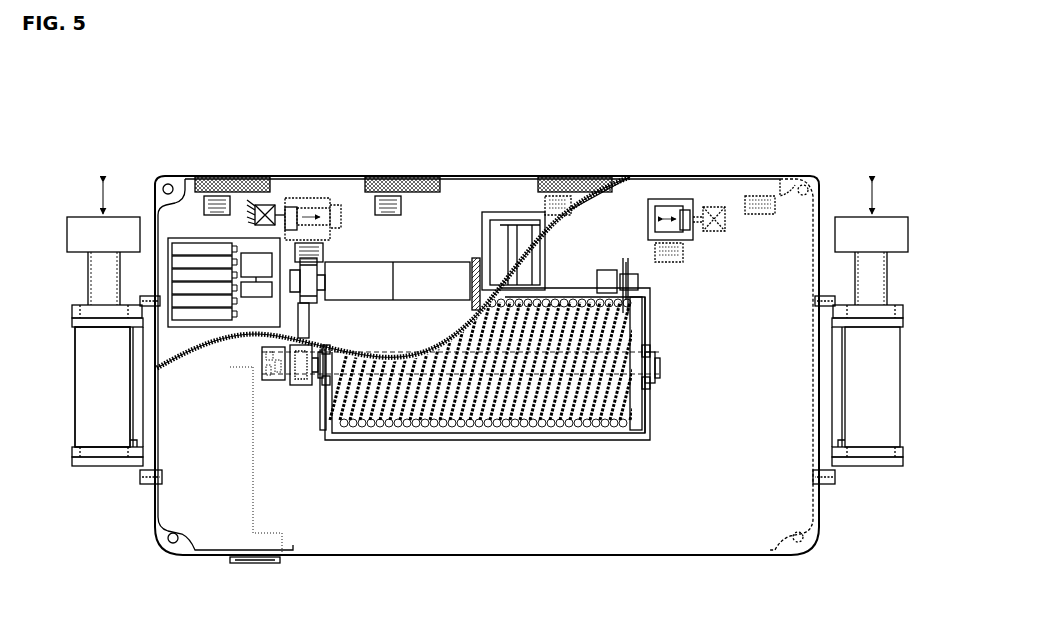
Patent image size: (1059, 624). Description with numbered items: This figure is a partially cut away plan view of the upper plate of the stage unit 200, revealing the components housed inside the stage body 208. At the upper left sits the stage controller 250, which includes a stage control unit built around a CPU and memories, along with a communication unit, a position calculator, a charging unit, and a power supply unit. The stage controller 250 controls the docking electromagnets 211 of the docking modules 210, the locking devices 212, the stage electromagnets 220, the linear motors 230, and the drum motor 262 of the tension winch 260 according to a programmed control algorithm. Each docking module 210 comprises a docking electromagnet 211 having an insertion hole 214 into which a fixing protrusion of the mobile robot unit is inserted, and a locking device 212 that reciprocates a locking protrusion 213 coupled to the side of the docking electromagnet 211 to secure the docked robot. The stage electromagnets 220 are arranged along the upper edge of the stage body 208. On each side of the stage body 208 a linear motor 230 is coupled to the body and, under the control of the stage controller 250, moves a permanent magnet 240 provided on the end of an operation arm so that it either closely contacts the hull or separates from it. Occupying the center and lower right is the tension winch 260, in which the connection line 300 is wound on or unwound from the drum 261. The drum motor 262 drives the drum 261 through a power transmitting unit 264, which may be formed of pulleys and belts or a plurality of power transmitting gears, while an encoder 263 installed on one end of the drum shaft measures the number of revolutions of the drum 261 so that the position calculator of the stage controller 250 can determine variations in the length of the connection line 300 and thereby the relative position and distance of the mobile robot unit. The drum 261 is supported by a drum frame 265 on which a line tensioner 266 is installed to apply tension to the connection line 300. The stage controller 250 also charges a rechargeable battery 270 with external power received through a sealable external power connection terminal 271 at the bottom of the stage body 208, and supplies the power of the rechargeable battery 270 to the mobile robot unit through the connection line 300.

The stage unit 200 is at (512, 57).
The stage body 208 is at (153, 177).
The docking module 210 is at (392, 112).
The docking electromagnet 211 is at (341, 210).
The locking device 212 is at (272, 205).
The locking protrusion 213 is at (297, 208).
The insertion hole 214 is at (322, 199).
The stage electromagnet 220 is at (219, 176).
The linear motor 230 is at (75, 383).
The permanent magnet 240 is at (67, 237).
The stage controller 250 is at (182, 238).
The tension winch 260 is at (605, 441).
The drum 261 is at (645, 430).
The drum motor 262 is at (392, 262).
The encoder 263 is at (268, 383).
The power transmitting unit 264 is at (312, 322).
The drum frame 265 is at (650, 312).
The line tensioner 266 is at (607, 270).
The rechargeable battery 270 is at (527, 230).
The external power connection terminal 271 is at (258, 565).
The connection line 300 is at (634, 262).